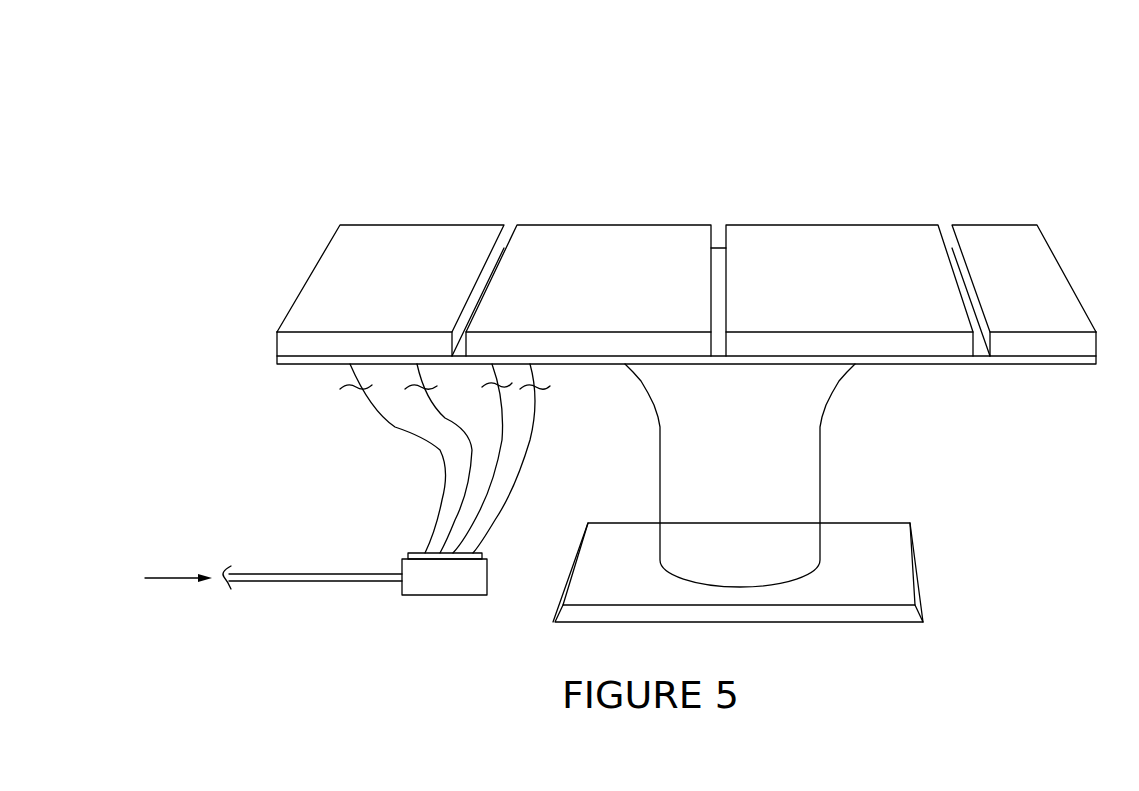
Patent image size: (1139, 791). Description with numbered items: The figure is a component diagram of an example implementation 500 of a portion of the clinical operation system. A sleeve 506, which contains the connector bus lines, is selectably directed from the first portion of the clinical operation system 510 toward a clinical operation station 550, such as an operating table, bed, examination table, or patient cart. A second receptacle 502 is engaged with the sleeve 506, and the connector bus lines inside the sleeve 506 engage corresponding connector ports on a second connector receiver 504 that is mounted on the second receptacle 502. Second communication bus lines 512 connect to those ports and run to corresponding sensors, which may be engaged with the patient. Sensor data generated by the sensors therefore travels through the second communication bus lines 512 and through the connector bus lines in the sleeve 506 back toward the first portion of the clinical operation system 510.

The example implementation 500 is at (943, 87).
The clinical operation station 550 is at (940, 222).
The second communication bus lines 512 is at (437, 473).
The second connector receiver 504 is at (475, 557).
The second receptacle 502 is at (470, 590).
The sleeve 506 is at (360, 582).
The first portion of the clinical operation system 510 is at (170, 587).